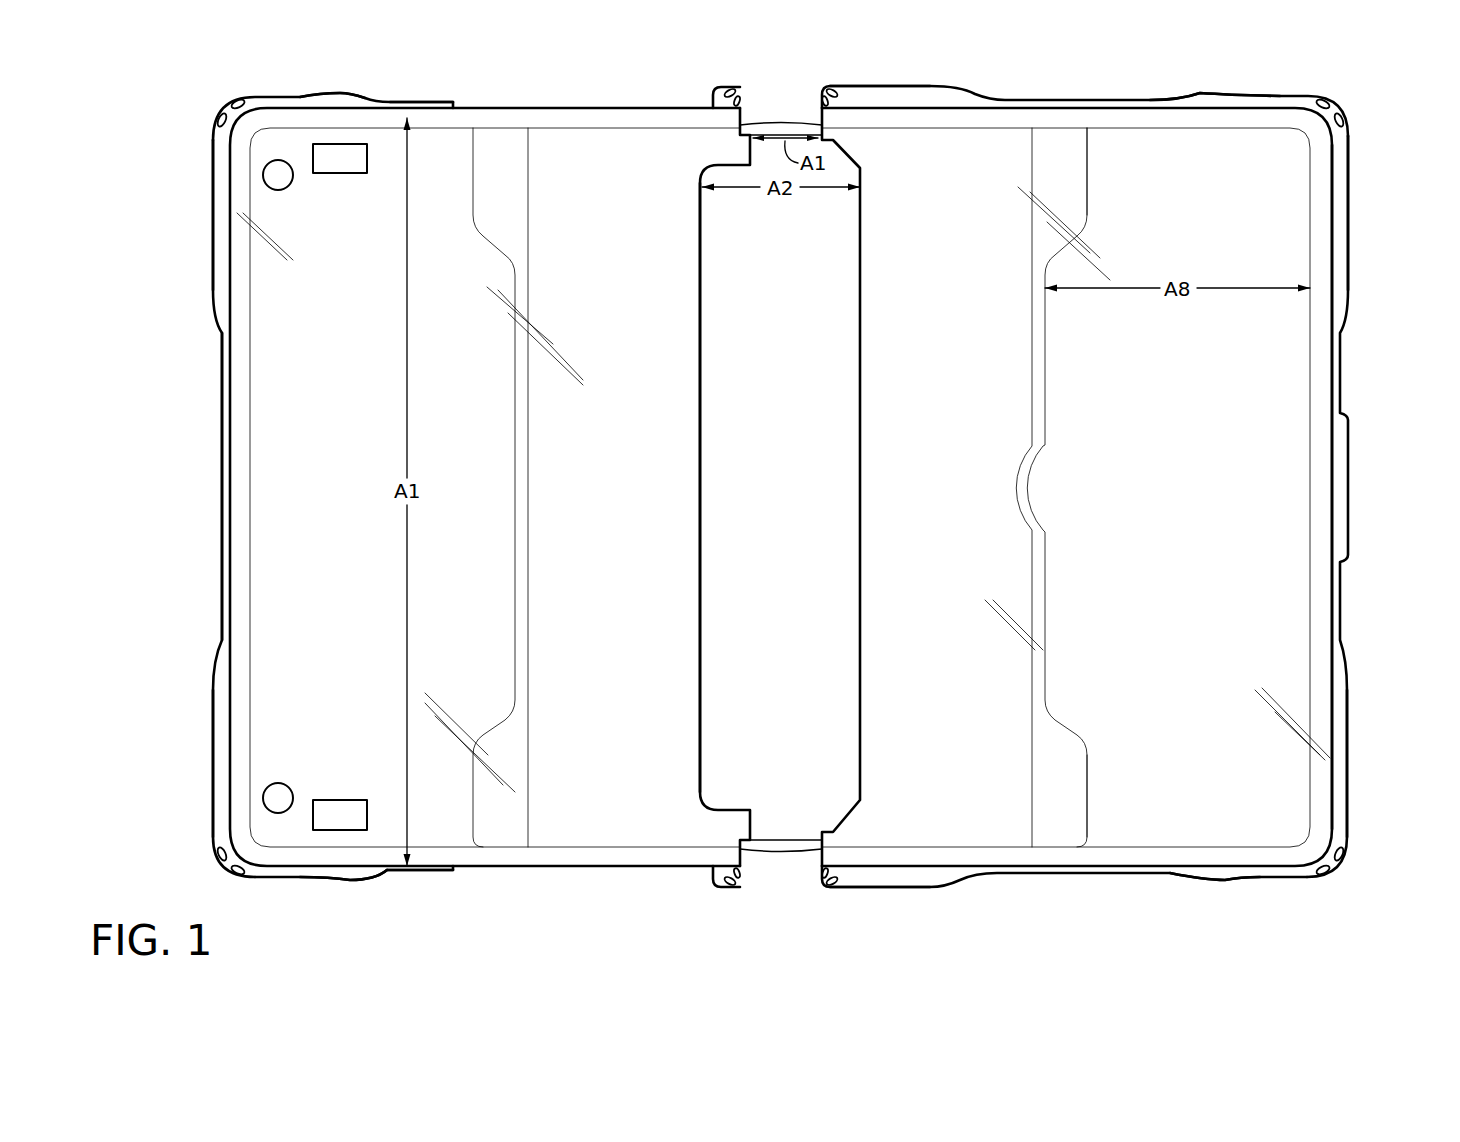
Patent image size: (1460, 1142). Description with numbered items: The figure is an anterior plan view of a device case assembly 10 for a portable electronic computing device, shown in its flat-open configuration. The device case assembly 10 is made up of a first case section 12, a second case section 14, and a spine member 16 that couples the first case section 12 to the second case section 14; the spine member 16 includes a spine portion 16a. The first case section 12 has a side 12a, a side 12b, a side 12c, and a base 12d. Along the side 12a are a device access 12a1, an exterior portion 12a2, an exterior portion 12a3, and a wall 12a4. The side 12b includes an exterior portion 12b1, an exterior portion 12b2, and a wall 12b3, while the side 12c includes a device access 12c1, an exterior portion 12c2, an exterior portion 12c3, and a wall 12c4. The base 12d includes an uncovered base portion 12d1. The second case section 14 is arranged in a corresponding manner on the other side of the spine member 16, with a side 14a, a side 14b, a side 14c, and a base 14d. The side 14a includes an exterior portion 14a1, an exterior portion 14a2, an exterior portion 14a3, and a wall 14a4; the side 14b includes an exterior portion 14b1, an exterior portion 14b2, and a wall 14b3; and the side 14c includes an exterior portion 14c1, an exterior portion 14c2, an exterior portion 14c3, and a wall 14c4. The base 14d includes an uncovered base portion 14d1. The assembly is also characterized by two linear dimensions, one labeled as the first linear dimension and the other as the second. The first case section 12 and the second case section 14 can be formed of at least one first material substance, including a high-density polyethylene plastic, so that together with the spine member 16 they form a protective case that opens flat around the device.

The device case assembly 10 is at (1262, 62).
The first case section 12 is at (178, 246).
The side 12a is at (522, 100).
The device access 12a1 is at (612, 107).
The exterior portion 12a2 is at (345, 93).
The exterior portion 12a3 is at (226, 98).
The wall 12a4 is at (330, 118).
The side 12b is at (188, 472).
The exterior portion 12b1 is at (212, 152).
The exterior portion 12b2 is at (213, 782).
The wall 12b3 is at (232, 533).
The side 12c is at (497, 872).
The device access 12c1 is at (590, 868).
The exterior portion 12c2 is at (300, 880).
The exterior portion 12c3 is at (228, 874).
The wall 12c4 is at (338, 862).
The base 12d is at (355, 362).
The uncovered base portion 12d1 is at (395, 444).
The second case section 14 is at (1377, 210).
The side 14a is at (1068, 98).
The exterior portion 14a1 is at (878, 92).
The exterior portion 14a2 is at (1205, 95).
The exterior portion 14a3 is at (1342, 104).
The wall 14a4 is at (1175, 118).
The side 14b is at (1363, 468).
The exterior portion 14b1 is at (1350, 155).
The exterior portion 14b2 is at (1350, 777).
The wall 14b3 is at (1330, 367).
The side 14c is at (1040, 880).
The exterior portion 14c1 is at (880, 890).
The exterior portion 14c2 is at (1257, 878).
The exterior portion 14c3 is at (1335, 876).
The wall 14c4 is at (1180, 862).
The base 14d is at (1112, 477).
The uncovered base portion 14d1 is at (1160, 417).
The spine member 16 is at (775, 100).
The spine portion 16a is at (800, 362).